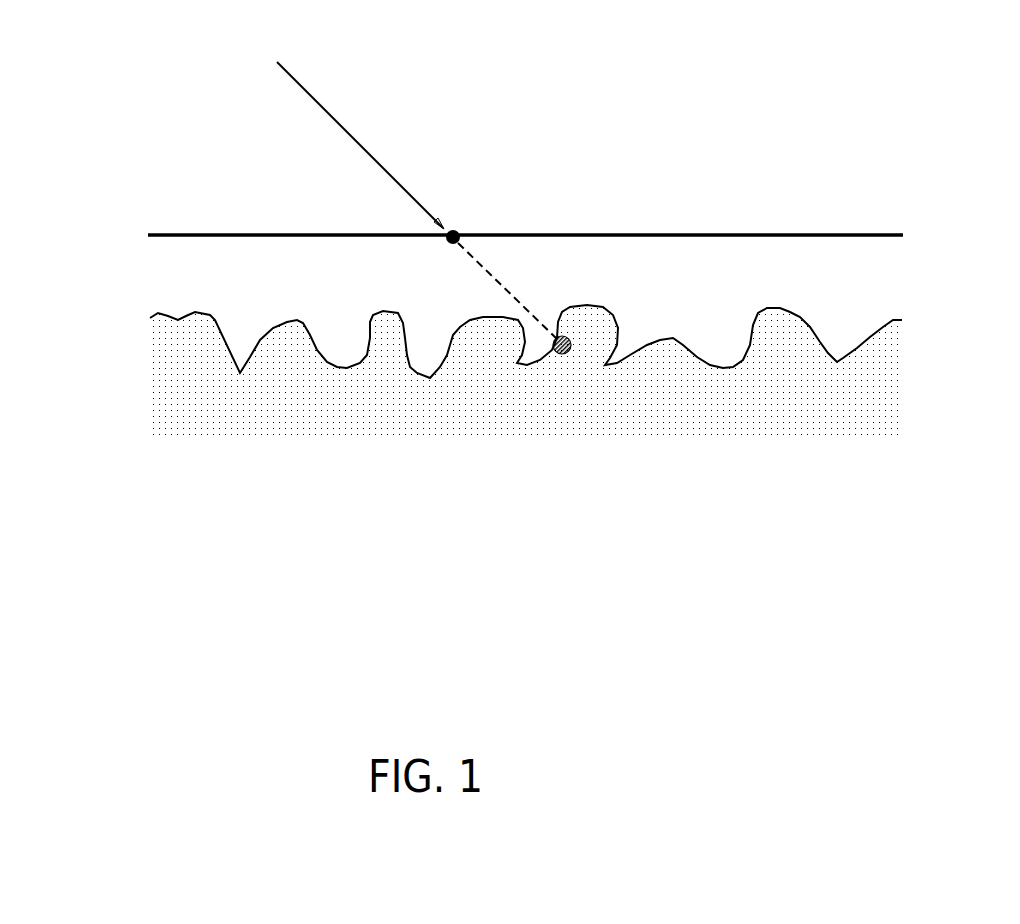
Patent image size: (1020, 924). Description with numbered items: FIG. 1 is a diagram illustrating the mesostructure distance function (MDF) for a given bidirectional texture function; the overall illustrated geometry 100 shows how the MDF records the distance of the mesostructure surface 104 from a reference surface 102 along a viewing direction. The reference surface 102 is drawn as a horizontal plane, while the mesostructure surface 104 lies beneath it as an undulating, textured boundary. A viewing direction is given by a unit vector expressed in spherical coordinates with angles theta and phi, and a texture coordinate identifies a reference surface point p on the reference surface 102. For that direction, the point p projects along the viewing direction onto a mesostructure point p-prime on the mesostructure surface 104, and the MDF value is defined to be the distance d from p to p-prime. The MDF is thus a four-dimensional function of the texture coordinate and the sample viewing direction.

The mesostructure rendering geometry 100 is at (484, 311).
The reference surface 102 is at (283, 213).
The mesostructure surface 104 is at (757, 412).